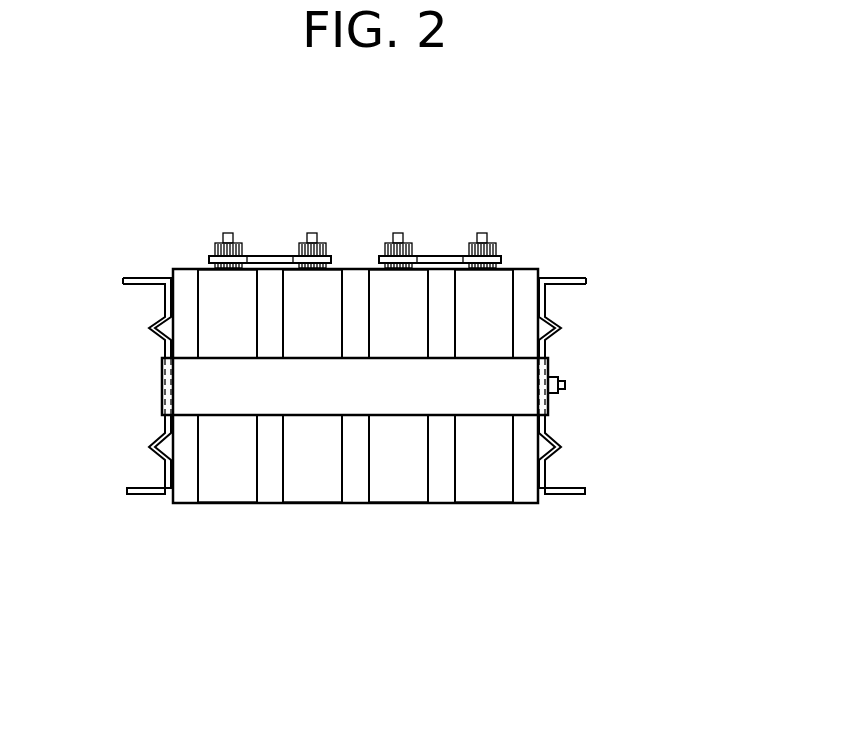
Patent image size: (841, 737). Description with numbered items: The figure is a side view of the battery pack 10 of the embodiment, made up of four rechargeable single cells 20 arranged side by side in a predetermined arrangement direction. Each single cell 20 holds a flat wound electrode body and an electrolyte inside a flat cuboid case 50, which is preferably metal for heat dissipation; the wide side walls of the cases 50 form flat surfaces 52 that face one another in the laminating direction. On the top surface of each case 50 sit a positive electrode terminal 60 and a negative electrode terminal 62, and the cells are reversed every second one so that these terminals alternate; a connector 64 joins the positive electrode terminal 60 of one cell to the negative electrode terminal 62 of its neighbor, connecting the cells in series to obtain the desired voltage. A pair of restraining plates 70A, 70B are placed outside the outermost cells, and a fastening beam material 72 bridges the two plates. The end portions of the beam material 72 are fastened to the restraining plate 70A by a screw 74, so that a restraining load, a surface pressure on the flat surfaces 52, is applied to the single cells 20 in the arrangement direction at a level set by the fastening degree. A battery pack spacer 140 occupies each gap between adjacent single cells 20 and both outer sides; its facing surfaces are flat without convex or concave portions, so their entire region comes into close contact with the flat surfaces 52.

The battery pack 10 is at (675, 113).
The single cell 20 is at (355, 448).
The case 50 is at (482, 495).
The flat surface 52 is at (198, 298).
The positive electrode terminal 60 is at (228, 233).
The negative electrode terminal 62 is at (312, 233).
The connector 64 is at (252, 256).
The restraining plate 70A is at (573, 487).
The restraining plate 70B is at (138, 488).
The fastening beam material 72 is at (192, 377).
The screw 74 is at (567, 383).
The battery pack spacer 140 is at (178, 505).